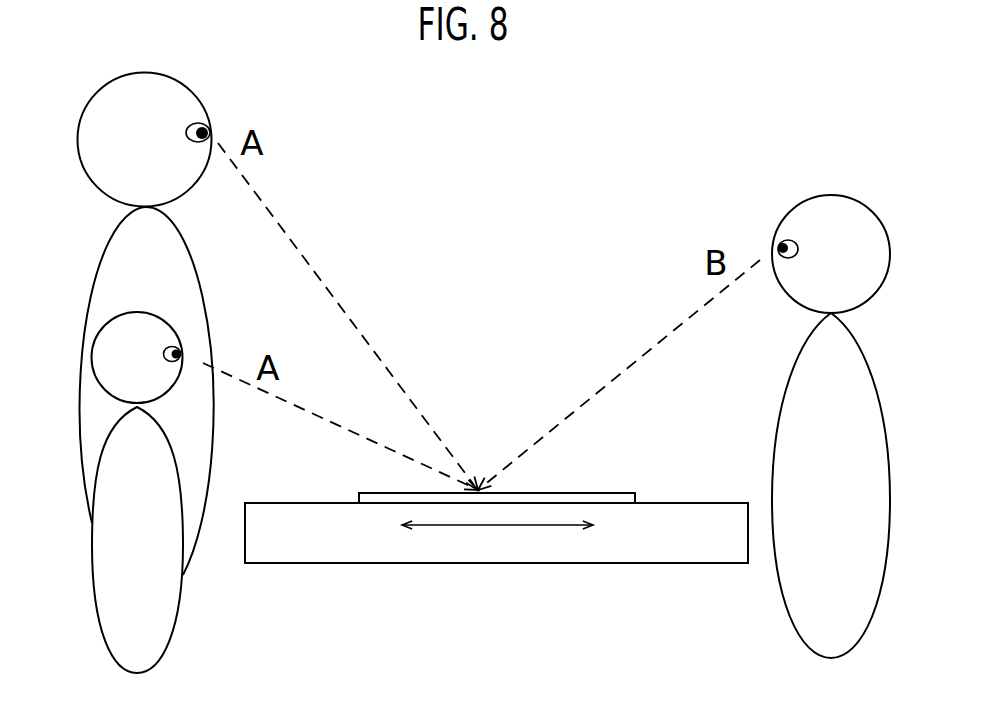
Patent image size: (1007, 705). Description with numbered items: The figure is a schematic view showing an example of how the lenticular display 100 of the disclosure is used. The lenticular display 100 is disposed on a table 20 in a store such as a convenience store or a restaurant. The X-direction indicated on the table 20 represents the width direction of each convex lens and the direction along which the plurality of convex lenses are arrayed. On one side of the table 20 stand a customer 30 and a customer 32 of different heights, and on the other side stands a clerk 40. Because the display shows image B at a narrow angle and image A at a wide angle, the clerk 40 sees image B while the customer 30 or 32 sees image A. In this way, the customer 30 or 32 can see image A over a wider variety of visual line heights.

The table 20 is at (445, 563).
The customer 30 is at (110, 248).
The customer 32 is at (95, 575).
The clerk 40 is at (872, 360).
The lenticular display 100 is at (598, 493).